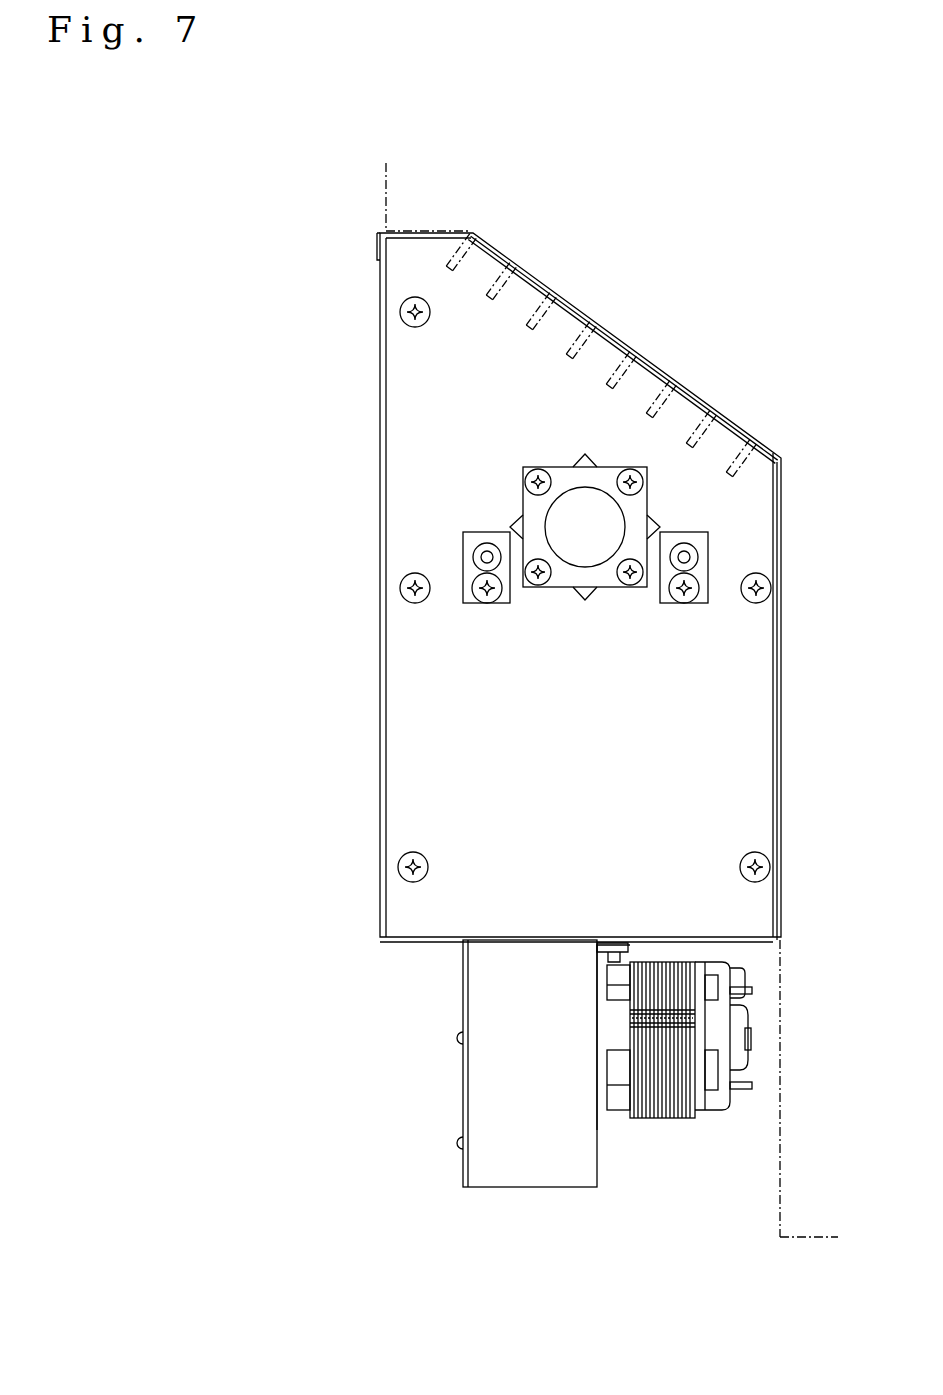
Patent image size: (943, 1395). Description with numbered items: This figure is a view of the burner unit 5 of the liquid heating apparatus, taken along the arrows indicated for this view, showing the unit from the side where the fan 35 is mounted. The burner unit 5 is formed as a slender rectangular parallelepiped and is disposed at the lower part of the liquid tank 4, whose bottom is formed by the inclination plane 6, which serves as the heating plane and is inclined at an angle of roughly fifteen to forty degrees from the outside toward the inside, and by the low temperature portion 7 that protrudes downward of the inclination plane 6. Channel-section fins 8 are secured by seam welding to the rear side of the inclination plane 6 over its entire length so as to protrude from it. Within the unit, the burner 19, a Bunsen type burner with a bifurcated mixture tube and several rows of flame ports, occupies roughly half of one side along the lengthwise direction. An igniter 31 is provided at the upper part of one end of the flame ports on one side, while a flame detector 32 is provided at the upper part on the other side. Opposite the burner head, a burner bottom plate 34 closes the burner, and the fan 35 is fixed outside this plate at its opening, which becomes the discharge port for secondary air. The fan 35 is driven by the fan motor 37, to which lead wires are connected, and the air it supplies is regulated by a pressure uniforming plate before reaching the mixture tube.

The liquid tank 4 is at (380, 188).
The burner unit 5 is at (372, 460).
The inclination plane 6 is at (630, 346).
The low temperature portion 7 is at (772, 1160).
The fins 8 is at (522, 337).
The burner 19 is at (412, 712).
The igniter 31 is at (708, 545).
The flame detector 32 is at (463, 552).
The burner bottom plate 34 is at (433, 940).
The fan 35 is at (452, 1091).
The fan motor 37 is at (703, 1112).